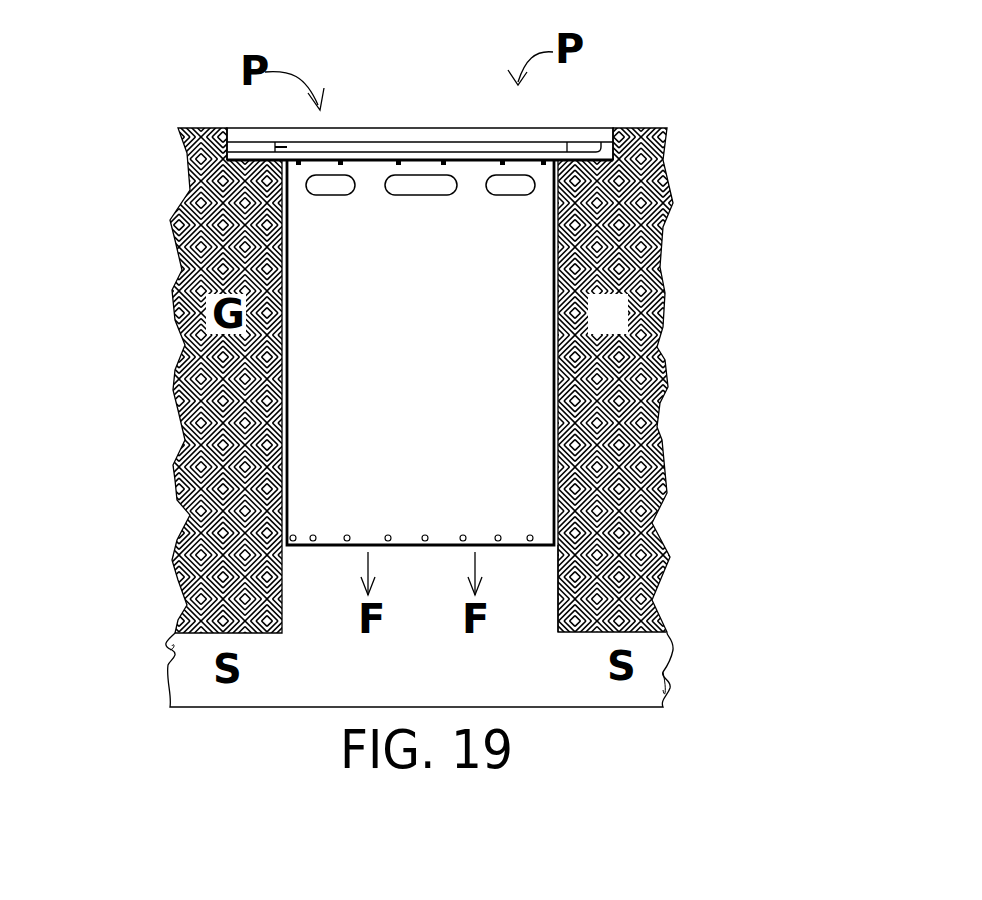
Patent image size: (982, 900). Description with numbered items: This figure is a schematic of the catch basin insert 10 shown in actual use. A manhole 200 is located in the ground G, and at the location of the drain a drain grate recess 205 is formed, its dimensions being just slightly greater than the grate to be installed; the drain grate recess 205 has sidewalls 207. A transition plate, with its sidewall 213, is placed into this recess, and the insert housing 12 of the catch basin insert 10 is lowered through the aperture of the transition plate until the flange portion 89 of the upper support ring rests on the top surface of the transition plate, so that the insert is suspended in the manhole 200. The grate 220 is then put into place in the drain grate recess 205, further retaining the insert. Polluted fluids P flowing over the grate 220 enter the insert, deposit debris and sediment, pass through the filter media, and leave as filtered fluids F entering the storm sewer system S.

The catch basin insert 10 is at (410, 100).
The insert housing 12 is at (512, 473).
The grate 220 is at (428, 120).
The sidewall 213 is at (603, 149).
The sidewalls 207 is at (228, 146).
The flange portion 89 is at (280, 149).
The drain grate recess 205 is at (596, 176).
The manhole 200 is at (558, 580).